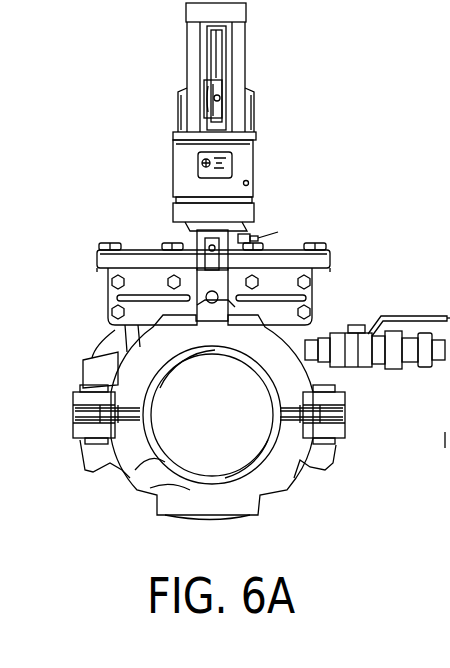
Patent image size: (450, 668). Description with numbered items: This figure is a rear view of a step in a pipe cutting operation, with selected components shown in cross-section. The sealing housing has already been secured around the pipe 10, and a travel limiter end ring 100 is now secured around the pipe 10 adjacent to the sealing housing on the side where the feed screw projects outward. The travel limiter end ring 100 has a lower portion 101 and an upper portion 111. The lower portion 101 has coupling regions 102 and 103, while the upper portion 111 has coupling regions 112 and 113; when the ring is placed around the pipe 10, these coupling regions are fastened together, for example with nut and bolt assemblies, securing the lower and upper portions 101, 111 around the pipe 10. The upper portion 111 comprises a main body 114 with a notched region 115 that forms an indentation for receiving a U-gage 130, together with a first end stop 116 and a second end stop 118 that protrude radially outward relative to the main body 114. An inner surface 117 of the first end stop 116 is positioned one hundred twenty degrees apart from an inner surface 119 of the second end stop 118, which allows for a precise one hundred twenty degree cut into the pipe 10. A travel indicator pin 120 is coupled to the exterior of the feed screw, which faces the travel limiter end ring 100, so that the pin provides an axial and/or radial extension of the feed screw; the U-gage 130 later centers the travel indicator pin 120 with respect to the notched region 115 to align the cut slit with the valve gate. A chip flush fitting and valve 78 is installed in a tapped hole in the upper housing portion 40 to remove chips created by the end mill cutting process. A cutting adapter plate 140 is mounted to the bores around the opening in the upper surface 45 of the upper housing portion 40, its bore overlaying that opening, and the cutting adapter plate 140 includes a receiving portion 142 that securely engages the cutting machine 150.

The pipe 10 is at (156, 488).
The upper housing portion 40 is at (292, 293).
The upper surface 45 is at (98, 276).
The chip flush fitting and valve 78 is at (444, 316).
The travel limiter end ring 100 is at (278, 474).
The lower portion 101 is at (134, 466).
The coupling region 102 is at (74, 432).
The coupling region 103 is at (330, 442).
The upper portion 111 is at (78, 395).
The coupling region 112 is at (75, 415).
The coupling region 113 is at (338, 418).
The main body 114 is at (322, 332).
The notched region 115 is at (214, 296).
The first end stop 116 is at (340, 383).
The inner surface 117 is at (362, 331).
The second end stop 118 is at (100, 368).
The inner surface 119 is at (100, 358).
The travel indicator pin 120 is at (110, 296).
The U-gage 130 is at (222, 234).
The cutting adapter plate 140 is at (140, 262).
The receiving portion 142 is at (175, 246).
The cutting machine 150 is at (168, 84).